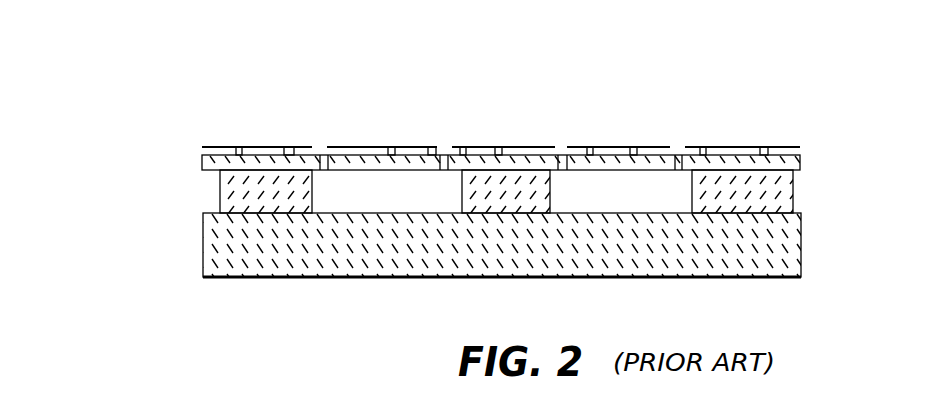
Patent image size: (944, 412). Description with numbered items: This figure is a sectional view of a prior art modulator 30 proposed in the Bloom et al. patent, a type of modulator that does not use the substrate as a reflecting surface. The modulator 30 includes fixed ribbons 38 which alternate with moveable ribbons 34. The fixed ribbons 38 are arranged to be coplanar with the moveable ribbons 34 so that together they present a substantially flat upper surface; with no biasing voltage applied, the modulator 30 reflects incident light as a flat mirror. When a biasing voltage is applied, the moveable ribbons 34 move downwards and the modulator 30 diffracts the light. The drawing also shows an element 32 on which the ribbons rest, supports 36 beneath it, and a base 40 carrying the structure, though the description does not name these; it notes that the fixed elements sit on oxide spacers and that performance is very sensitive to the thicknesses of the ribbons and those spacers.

The modulator 30 is at (135, 68).
The interconnect substrate layer 32 is at (302, 154).
The moveable ribbons 34 is at (423, 147).
The support spacer 36 is at (218, 199).
The fixed ribbons 38 is at (267, 147).
The base plate 40 is at (637, 276).